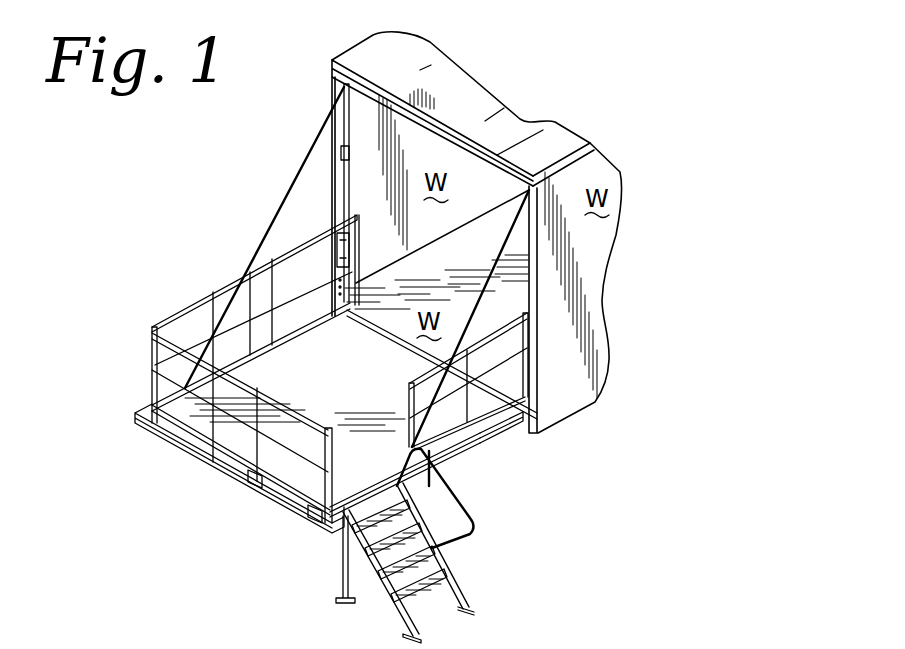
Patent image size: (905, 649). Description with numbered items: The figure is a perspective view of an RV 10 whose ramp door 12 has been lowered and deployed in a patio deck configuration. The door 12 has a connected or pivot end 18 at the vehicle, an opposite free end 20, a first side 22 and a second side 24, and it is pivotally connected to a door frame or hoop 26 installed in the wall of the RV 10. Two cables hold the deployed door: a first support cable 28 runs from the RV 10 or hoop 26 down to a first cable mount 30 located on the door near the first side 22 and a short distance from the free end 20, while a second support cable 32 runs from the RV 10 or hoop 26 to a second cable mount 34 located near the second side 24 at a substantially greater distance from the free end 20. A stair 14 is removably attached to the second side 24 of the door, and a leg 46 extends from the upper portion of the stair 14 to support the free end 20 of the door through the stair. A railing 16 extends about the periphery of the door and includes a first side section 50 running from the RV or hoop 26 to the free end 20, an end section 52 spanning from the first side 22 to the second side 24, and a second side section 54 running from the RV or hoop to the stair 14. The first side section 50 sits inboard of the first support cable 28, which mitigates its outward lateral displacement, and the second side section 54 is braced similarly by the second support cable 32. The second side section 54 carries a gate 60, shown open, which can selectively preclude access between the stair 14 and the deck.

The RV 10 is at (329, 356).
The ramp door 12 is at (322, 386).
The stair 14 is at (401, 541).
The railing 16 is at (220, 323).
The first end 18 is at (515, 434).
The second end 20 is at (233, 491).
The first side 22 is at (342, 258).
The second side 24 is at (453, 400).
The door frame 26 is at (330, 70).
The first support cable 28 is at (283, 200).
The first cable mount 30 is at (150, 375).
The second support cable 32 is at (474, 308).
The second cable mount 34 is at (400, 478).
The leg 46 is at (343, 578).
The first side section 50 is at (306, 243).
The end section 52 is at (297, 421).
The second side section 54 is at (494, 332).
The gate 60 is at (407, 380).